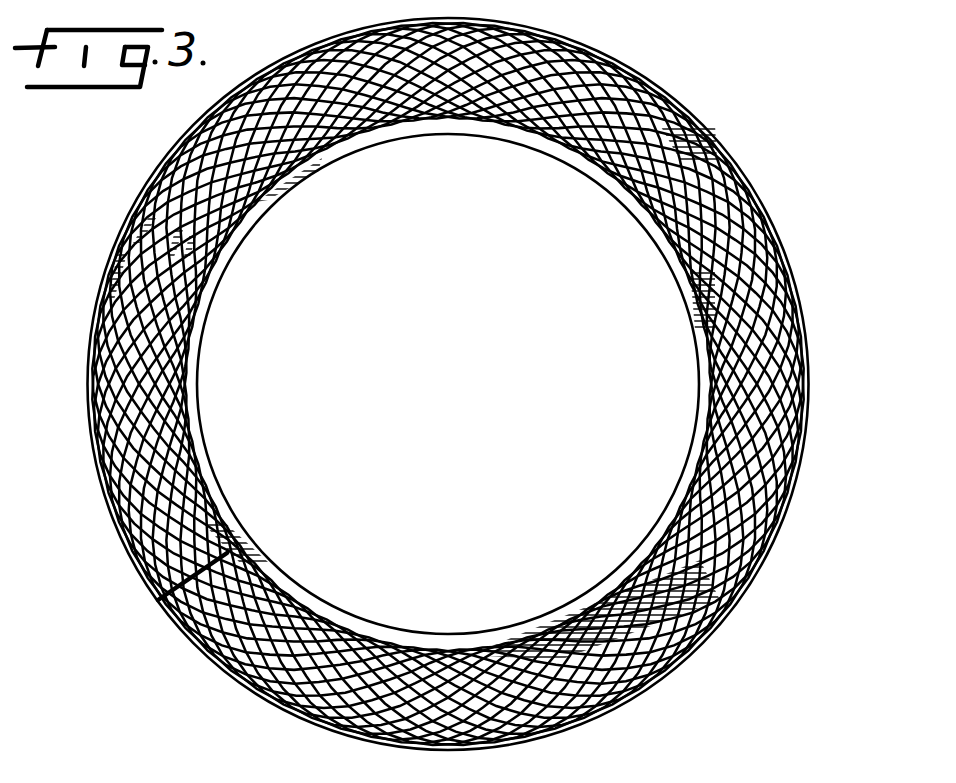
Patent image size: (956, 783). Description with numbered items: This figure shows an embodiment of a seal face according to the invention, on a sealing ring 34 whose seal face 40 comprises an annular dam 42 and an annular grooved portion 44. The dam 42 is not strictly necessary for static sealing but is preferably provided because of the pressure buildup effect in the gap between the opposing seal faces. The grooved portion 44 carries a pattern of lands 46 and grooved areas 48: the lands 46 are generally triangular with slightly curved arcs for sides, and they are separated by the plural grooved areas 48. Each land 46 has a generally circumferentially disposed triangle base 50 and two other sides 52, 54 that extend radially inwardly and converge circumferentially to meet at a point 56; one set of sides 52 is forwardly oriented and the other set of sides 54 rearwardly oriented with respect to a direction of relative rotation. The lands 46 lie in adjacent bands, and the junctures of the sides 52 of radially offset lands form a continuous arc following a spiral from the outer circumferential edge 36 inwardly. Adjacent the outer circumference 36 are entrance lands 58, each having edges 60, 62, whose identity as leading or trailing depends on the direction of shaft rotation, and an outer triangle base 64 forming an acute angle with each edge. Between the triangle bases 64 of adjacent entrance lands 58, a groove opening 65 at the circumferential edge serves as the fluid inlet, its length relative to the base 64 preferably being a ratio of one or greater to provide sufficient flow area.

The sealing ring 34 is at (741, 142).
The outer circumferential edge 36 is at (792, 500).
The seal face 40 is at (703, 195).
The annular dam 42 is at (698, 342).
The grooved portion 44 is at (178, 597).
The lands 46 is at (777, 263).
The grooved areas 48 is at (790, 435).
The triangle base 50 is at (600, 64).
The triangle side 52 is at (545, 62).
The triangle side 54 is at (620, 102).
The point 56 is at (578, 70).
The entrance lands 58 is at (290, 62).
The edge of entrance land 60 is at (117, 245).
The edge of entrance land 62 is at (138, 205).
The triangle base 64 is at (128, 217).
The groove opening 65 is at (240, 95).